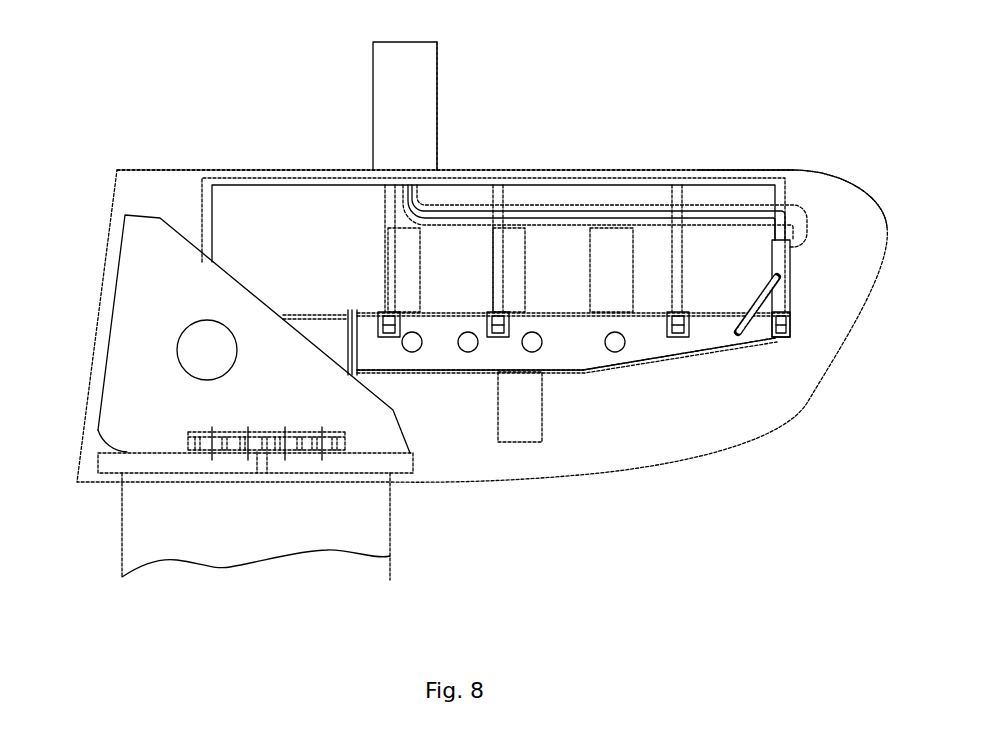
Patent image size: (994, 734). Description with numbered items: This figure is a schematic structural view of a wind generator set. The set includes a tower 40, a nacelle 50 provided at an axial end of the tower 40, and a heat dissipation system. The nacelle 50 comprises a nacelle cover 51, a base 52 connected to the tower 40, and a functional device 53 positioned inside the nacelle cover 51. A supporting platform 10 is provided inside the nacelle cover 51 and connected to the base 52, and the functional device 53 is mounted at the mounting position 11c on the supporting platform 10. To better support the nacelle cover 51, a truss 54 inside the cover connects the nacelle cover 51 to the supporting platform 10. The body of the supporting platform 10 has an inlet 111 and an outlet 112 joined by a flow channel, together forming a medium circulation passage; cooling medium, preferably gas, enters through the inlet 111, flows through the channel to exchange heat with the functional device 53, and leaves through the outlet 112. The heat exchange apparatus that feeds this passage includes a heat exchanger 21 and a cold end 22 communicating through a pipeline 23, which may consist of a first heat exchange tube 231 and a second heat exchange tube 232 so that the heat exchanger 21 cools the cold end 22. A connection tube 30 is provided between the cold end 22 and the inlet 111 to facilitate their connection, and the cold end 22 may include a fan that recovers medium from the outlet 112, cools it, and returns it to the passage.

The supporting platform 10 is at (578, 420).
The mounting position 11c is at (517, 372).
The inlet 111 is at (747, 332).
The outlet 112 is at (615, 343).
The heat exchanger 21 is at (430, 68).
The cold end 22 is at (788, 270).
The pipeline 23 is at (605, 163).
The first heat exchange tube 231 is at (583, 205).
The second heat exchange tube 232 is at (652, 225).
The connection tube 30 is at (772, 297).
The tower 40 is at (128, 522).
The nacelle 50 is at (93, 244).
The nacelle cover 51 is at (172, 168).
The base 52 is at (110, 403).
The functional device 53 is at (520, 230).
The truss 54 is at (753, 185).